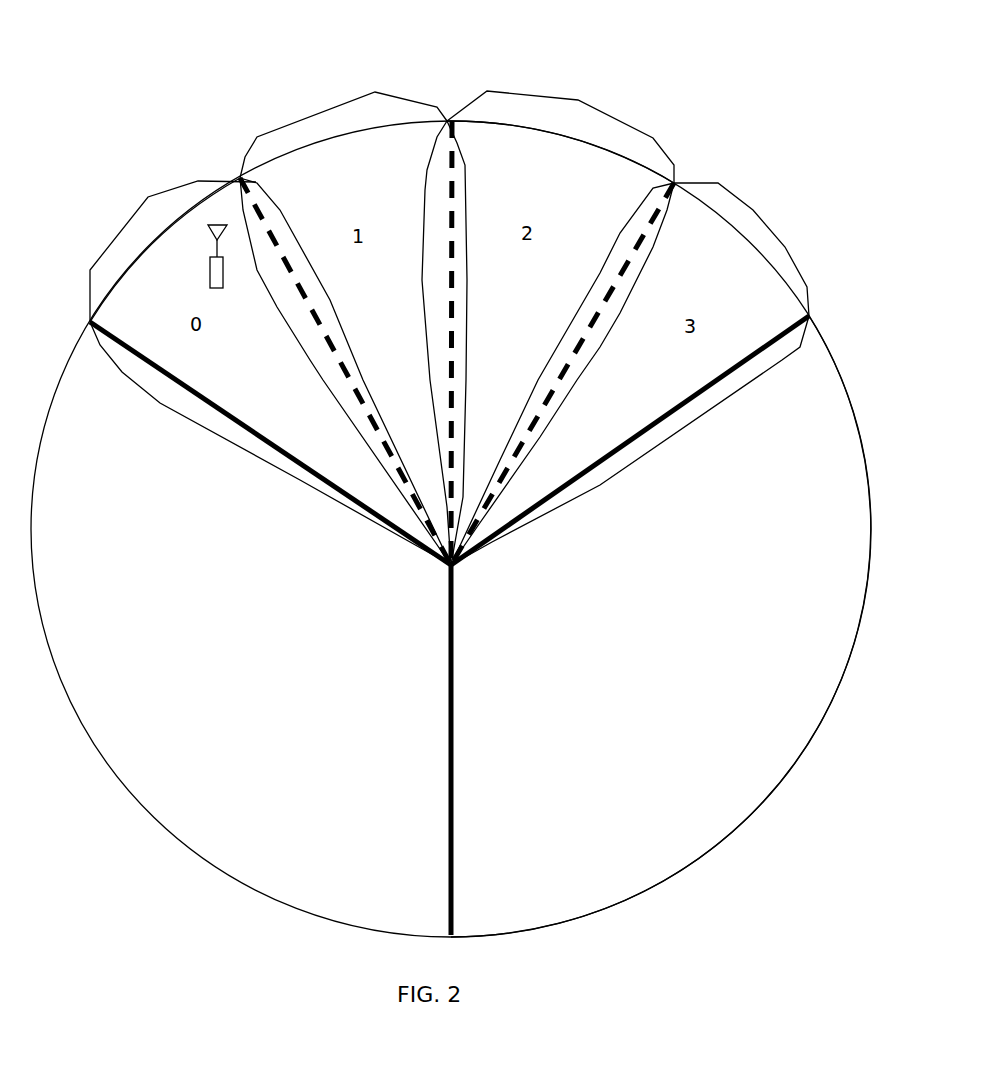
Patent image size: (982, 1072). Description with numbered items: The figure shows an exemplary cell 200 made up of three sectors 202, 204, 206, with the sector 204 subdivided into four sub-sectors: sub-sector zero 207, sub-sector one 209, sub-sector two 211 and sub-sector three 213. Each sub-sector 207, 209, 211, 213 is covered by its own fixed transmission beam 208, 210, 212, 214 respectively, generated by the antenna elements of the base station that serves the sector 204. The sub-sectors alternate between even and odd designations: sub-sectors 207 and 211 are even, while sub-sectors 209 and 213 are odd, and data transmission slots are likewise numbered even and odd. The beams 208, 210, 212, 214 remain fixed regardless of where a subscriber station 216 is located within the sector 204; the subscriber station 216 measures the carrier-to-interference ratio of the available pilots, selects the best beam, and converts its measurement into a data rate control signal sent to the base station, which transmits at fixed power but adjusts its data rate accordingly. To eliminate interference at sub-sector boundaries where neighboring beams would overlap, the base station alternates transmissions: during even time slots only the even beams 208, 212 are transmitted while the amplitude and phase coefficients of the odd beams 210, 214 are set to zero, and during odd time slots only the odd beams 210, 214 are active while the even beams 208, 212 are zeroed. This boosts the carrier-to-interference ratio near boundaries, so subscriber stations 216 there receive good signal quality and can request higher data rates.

The cell 200 is at (190, 884).
The sector 202 is at (85, 740).
The sector 204 is at (447, 121).
The sector 206 is at (822, 725).
The sub-sector 0 207 is at (130, 263).
The fixed transmission beam 208 is at (119, 218).
The sub-sector 1 209 is at (283, 153).
The fixed transmission beam 210 is at (307, 108).
The sub-sector 2 211 is at (540, 130).
The fixed transmission beam 212 is at (568, 95).
The sub-sector 3 213 is at (702, 202).
The fixed transmission beam 214 is at (762, 208).
The subscriber station 216 is at (216, 290).